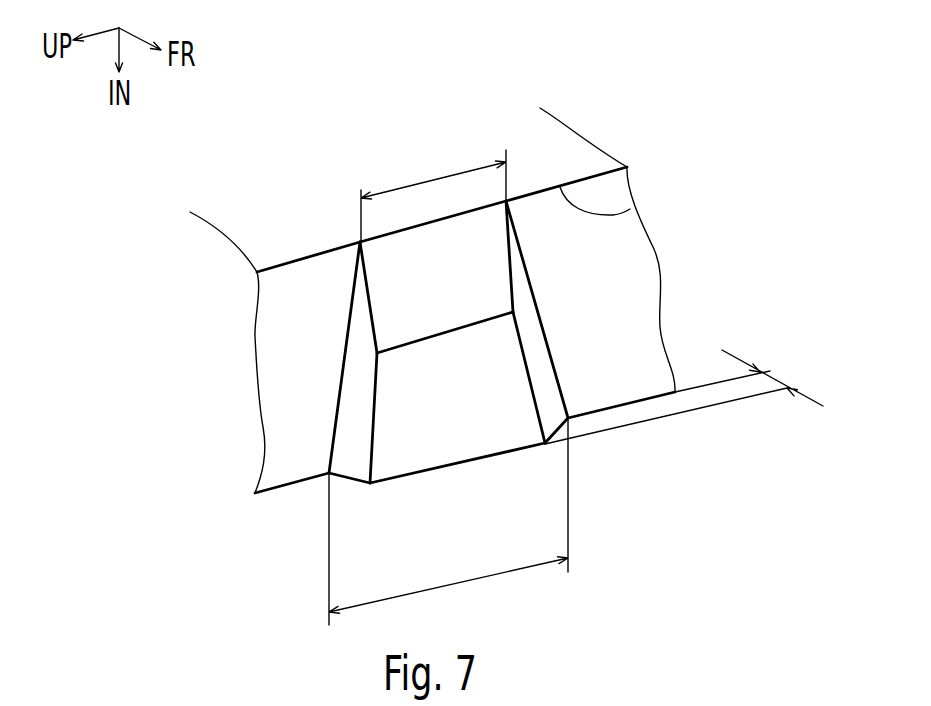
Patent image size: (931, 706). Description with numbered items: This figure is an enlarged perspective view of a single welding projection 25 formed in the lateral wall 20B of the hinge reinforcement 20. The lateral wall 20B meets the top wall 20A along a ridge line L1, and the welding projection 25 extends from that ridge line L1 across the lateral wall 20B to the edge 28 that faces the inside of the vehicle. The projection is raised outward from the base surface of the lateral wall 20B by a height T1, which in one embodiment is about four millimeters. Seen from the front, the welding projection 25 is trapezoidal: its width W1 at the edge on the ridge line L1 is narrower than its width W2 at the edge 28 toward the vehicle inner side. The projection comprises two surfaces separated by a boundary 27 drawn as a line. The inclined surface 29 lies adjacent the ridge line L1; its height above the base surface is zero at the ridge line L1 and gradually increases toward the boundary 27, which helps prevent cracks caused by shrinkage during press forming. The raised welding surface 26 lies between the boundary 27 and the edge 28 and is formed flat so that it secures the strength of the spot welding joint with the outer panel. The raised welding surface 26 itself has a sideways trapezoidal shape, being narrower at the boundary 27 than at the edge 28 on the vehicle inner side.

The hinge reinforcement 20 is at (343, 102).
The top wall 20A is at (565, 152).
The lateral wall 20B is at (641, 319).
The welding projection 25 is at (486, 438).
The raised welding surface 26 is at (465, 408).
The boundary 27 is at (423, 340).
The edge 28 is at (312, 383).
The inclined surface 29 is at (452, 289).
The ridge line L1 is at (630, 209).
The width at the ridge line edge W1 is at (433, 194).
The width at the vehicle inner side edge W2 is at (448, 521).
The height T1 is at (684, 394).